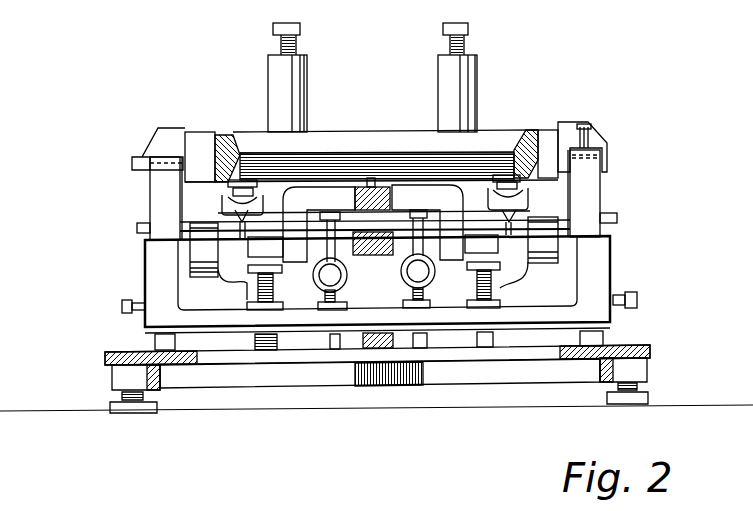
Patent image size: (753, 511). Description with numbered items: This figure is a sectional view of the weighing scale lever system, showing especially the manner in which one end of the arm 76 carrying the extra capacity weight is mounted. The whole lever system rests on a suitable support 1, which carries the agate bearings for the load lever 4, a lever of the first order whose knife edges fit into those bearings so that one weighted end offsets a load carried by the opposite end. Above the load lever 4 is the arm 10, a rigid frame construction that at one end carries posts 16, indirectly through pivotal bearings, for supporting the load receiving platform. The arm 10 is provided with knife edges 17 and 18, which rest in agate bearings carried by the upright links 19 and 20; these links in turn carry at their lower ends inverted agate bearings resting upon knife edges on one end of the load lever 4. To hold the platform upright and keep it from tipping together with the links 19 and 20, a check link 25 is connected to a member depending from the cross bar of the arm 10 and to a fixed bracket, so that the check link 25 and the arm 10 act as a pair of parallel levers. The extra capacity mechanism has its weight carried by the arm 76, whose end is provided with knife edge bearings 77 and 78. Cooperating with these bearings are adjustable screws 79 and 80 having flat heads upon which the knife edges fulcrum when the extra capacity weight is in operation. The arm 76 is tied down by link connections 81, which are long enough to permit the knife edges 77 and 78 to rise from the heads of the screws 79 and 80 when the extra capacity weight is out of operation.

The support 1 is at (272, 377).
The load lever 4 is at (379, 280).
The arm 10 is at (526, 128).
The posts 16 is at (303, 97).
The knife edge 17 is at (593, 128).
The knife edge 18 is at (152, 135).
The upright link 19 is at (603, 183).
The upright link 20 is at (150, 190).
The check link 25 is at (389, 383).
The arm 76 is at (366, 185).
The knife edge bearing 77 is at (258, 247).
The knife edge bearing 78 is at (500, 250).
The adjustable screw 79 is at (252, 300).
The adjustable screw 80 is at (498, 297).
The link connections 81 is at (326, 284).